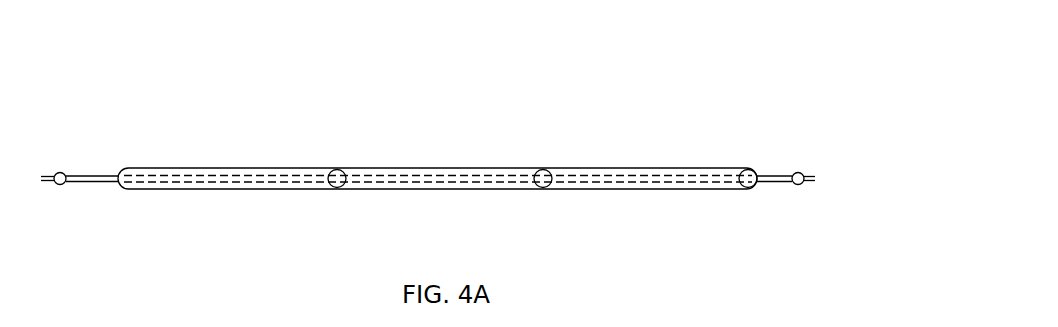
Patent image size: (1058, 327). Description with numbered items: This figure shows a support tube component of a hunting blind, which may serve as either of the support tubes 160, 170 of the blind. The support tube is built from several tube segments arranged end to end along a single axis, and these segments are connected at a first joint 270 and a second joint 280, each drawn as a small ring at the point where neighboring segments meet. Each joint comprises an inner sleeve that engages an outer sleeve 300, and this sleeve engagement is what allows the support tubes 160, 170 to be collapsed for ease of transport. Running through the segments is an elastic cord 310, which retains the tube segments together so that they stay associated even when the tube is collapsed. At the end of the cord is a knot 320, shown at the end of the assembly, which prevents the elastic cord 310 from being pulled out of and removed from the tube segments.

The support tube 160 is at (467, 218).
The support tube 170 is at (647, 189).
The first joint 270 is at (542, 188).
The second joint 280 is at (337, 188).
The outer sleeve 300 is at (80, 179).
The elastic cord 310 is at (811, 175).
The knot 320 is at (798, 172).